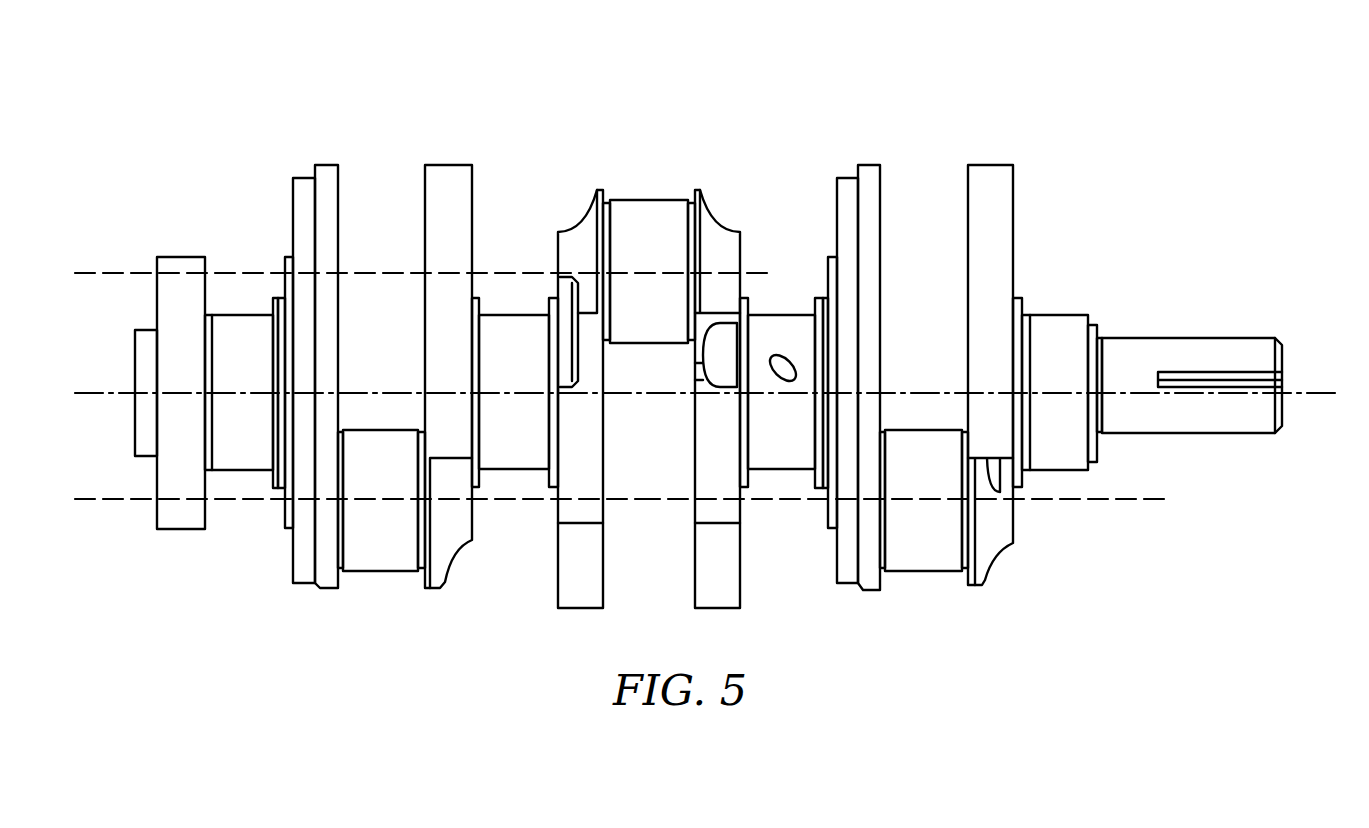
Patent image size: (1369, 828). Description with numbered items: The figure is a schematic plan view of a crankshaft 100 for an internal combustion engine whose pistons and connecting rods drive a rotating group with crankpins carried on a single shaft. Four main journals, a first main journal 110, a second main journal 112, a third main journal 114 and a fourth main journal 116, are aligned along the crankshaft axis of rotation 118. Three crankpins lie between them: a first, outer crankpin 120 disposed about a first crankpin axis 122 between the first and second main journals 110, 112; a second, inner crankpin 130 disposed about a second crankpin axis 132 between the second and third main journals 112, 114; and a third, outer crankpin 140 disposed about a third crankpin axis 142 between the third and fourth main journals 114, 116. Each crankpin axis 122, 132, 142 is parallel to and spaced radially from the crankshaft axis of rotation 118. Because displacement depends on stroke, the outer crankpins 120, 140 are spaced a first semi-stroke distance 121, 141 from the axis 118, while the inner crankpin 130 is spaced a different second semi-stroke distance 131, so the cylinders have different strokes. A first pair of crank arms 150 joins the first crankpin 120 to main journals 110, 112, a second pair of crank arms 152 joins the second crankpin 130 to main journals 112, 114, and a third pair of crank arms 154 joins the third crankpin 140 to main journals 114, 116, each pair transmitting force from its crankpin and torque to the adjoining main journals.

The crankshaft 100 is at (190, 187).
The first main journal 110 is at (1058, 304).
The second main journal 112 is at (783, 304).
The third main journal 114 is at (515, 304).
The fourth main journal 116 is at (241, 304).
The crankshaft axis of rotation 118 is at (1306, 389).
The first crankpin 120 is at (924, 419).
The first semi-stroke distance 121 is at (1152, 395).
The first crankpin axis 122 is at (1027, 502).
The second crankpin 130 is at (650, 194).
The second semi-stroke distance 131 is at (95, 275).
The second crankpin axis 132 is at (759, 270).
The third crankpin 140 is at (381, 419).
The first semi-stroke distance 141 is at (95, 395).
The third crankpin axis 142 is at (273, 502).
The first pair of crank arms 150 is at (870, 598).
The second pair of crank arms 152 is at (702, 187).
The third pair of crank arms 154 is at (436, 598).